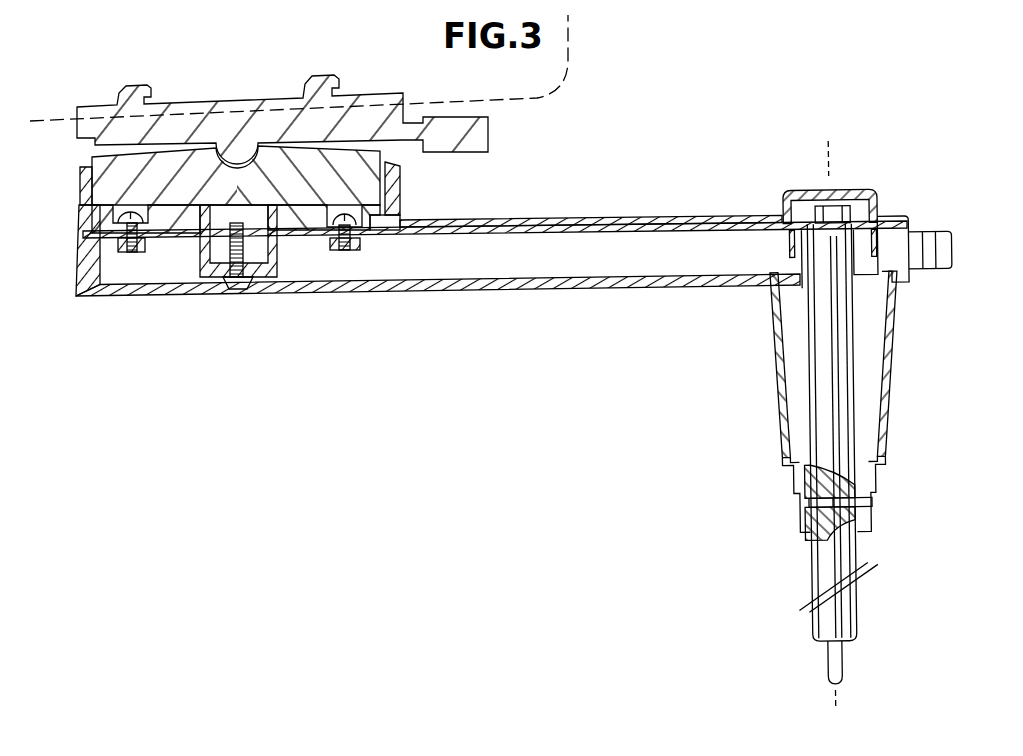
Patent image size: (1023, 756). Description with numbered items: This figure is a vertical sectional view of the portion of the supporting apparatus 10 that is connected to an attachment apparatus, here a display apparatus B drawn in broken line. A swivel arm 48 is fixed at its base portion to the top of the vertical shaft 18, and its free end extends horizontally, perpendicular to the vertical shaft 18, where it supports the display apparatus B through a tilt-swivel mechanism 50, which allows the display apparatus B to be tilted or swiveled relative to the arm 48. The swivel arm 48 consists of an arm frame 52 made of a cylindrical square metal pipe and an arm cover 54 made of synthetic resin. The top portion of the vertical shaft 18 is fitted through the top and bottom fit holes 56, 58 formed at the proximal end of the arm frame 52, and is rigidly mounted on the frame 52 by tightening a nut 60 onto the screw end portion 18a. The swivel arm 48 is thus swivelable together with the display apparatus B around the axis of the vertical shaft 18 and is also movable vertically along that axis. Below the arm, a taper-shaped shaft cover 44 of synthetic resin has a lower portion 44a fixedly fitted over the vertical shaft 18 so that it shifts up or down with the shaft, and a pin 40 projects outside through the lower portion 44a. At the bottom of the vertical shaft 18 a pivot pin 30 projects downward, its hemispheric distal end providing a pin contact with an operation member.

The supporting apparatus 10 is at (857, 426).
The vertical shaft 18 is at (808, 425).
The screw end portion 18a is at (842, 192).
The pivot pin 30 is at (838, 662).
The pin 40 is at (868, 502).
The shaft cover 44 is at (772, 357).
The lower portion 44a is at (866, 520).
The swivel arm 48 is at (711, 214).
The tilt-swivel mechanism 50 is at (414, 177).
The arm frame 52 is at (452, 291).
The arm cover 54 is at (627, 218).
The top fit hole 56 is at (838, 246).
The bottom fit hole 58 is at (807, 285).
The nut 60 is at (856, 214).
The display apparatus B is at (568, 62).